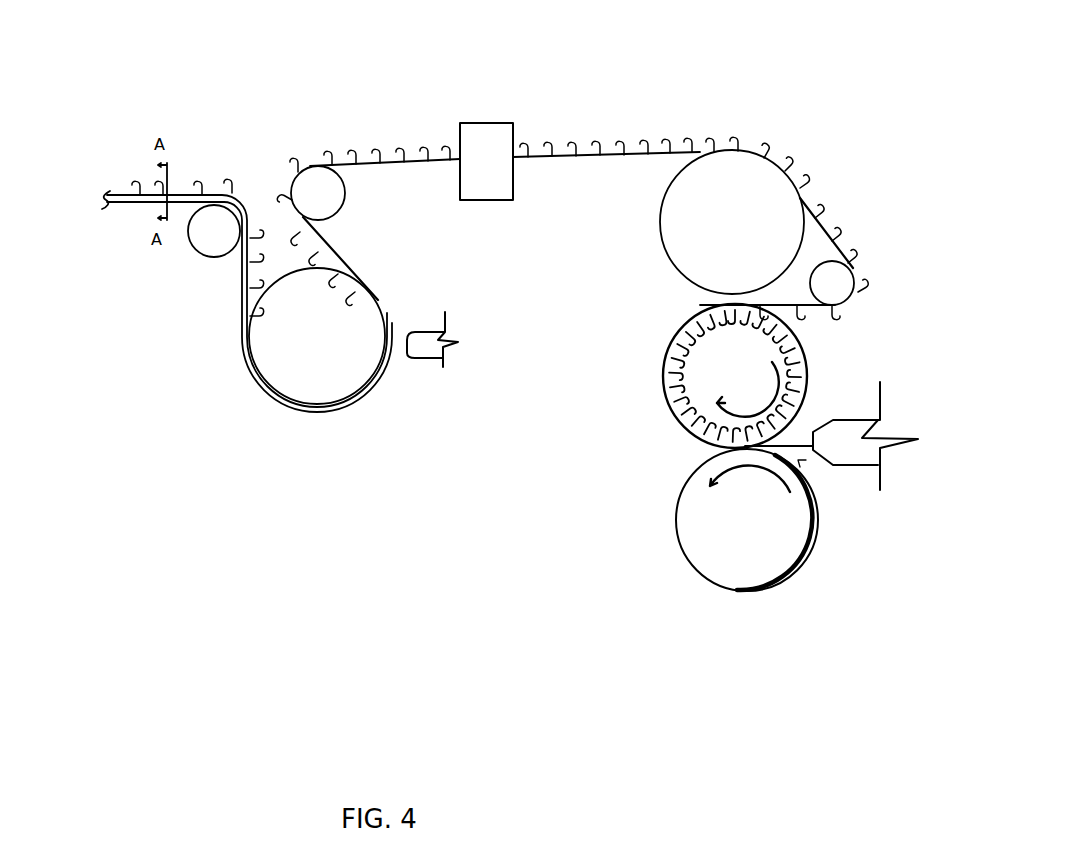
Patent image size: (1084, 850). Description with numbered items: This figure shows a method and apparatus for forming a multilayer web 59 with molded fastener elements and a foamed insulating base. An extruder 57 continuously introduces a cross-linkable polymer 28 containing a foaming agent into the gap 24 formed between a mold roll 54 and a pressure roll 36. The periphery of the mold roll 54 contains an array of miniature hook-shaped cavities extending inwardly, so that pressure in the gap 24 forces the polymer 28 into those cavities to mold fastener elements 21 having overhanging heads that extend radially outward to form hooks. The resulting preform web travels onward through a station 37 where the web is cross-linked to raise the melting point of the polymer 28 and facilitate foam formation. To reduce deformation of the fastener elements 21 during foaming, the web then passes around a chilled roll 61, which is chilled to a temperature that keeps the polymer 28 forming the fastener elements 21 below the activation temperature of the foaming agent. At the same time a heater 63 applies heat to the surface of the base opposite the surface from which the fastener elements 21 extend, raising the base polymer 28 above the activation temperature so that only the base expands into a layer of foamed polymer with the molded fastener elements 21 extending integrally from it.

The fastener elements 21 is at (615, 131).
The gap 24 is at (798, 460).
The polymer 28 is at (797, 443).
The pressure roll 36 is at (698, 512).
The cross-linking station 37 is at (487, 138).
The mold roll 54 is at (695, 370).
The extruder 57 is at (883, 457).
The multilayer web 59 is at (111, 160).
The chilled roll 61 is at (302, 378).
The heater 63 is at (428, 348).